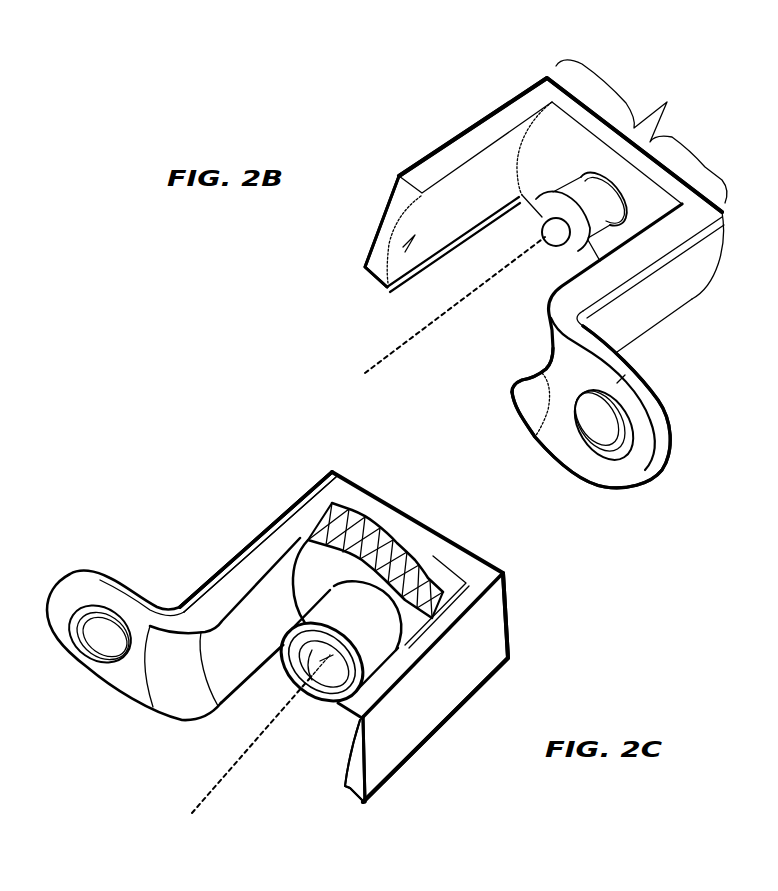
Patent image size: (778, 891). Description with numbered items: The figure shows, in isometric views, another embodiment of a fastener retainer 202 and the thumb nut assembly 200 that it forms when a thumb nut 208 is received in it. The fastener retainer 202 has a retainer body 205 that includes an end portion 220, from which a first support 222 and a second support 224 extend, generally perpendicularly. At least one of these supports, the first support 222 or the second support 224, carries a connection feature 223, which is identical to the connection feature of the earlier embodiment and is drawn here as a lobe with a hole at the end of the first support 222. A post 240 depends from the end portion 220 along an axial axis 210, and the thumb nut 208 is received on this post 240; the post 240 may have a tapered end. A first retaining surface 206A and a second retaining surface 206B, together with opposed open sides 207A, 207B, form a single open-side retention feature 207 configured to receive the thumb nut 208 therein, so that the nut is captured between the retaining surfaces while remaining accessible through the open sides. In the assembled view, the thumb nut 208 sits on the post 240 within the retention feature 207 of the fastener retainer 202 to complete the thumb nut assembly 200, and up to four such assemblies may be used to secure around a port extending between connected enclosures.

In FIG. 2C, the thumb nut assembly 200 is at (239, 496).
In FIG. 2B, the fastener retainer 202 is at (519, 283).
In FIG. 2C, the fastener retainer 202 is at (324, 644).
In FIG. 2B, the retainer body 205 is at (428, 162).
In FIG. 2C, the retainer body 205 is at (506, 673).
In FIG. 2B, the first retaining surface 206A is at (548, 345).
In FIG. 2B, the second retaining surface 206B is at (404, 238).
In FIG. 2B, the single open-side retention feature 207 is at (462, 334).
In FIG. 2C, the single open-side retention feature 207 is at (292, 756).
In FIG. 2C, the open side 207A is at (298, 500).
In FIG. 2C, the open side 207B is at (313, 782).
In FIG. 2C, the knurled nut 208 is at (403, 543).
In FIG. 2B, the axial axis 210 is at (393, 348).
In FIG. 2C, the axial axis 210 is at (227, 773).
In FIG. 2B, the end portion 220 is at (641, 131).
In FIG. 2B, the first support 222 is at (663, 298).
In FIG. 2C, the first support 222 is at (246, 544).
In FIG. 2B, the connection feature 223 is at (668, 470).
In FIG. 2C, the connection feature 223 is at (72, 571).
In FIG. 2B, the second support 224 is at (480, 108).
In FIG. 2C, the second support 224 is at (446, 736).
In FIG. 2B, the post 240 is at (547, 190).